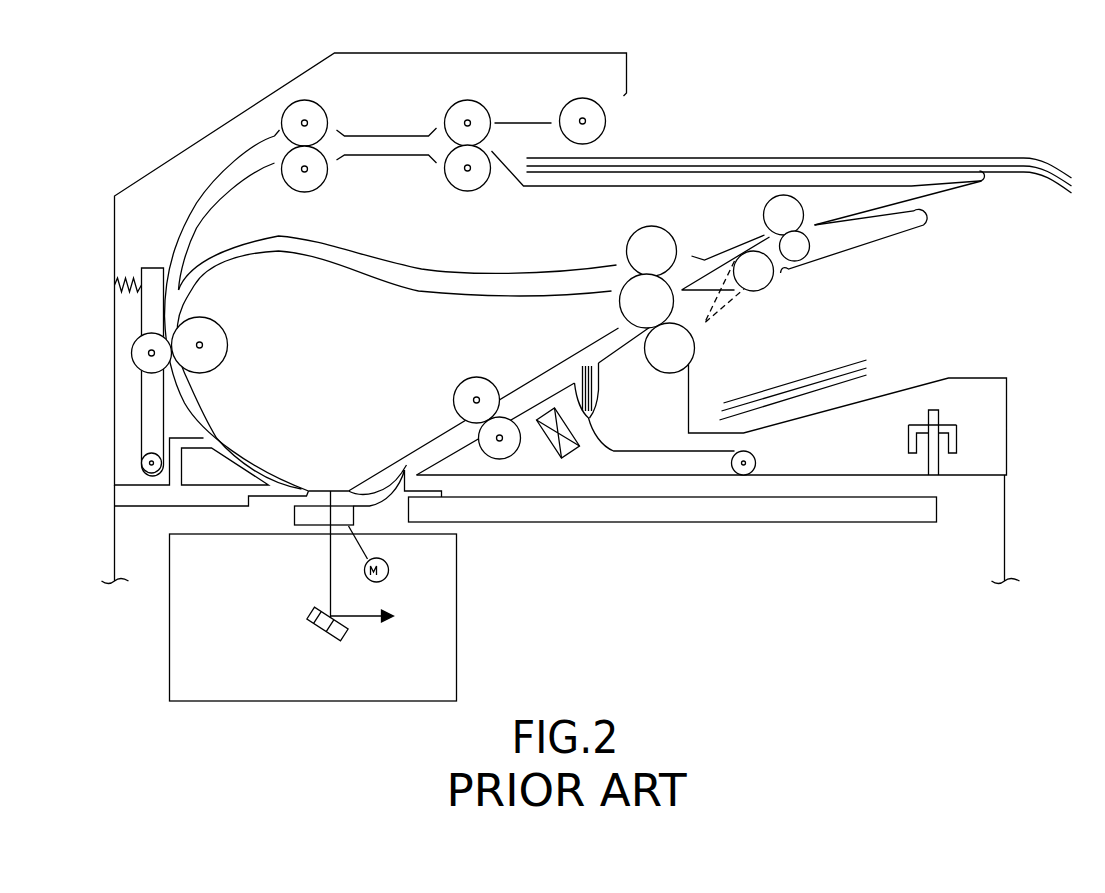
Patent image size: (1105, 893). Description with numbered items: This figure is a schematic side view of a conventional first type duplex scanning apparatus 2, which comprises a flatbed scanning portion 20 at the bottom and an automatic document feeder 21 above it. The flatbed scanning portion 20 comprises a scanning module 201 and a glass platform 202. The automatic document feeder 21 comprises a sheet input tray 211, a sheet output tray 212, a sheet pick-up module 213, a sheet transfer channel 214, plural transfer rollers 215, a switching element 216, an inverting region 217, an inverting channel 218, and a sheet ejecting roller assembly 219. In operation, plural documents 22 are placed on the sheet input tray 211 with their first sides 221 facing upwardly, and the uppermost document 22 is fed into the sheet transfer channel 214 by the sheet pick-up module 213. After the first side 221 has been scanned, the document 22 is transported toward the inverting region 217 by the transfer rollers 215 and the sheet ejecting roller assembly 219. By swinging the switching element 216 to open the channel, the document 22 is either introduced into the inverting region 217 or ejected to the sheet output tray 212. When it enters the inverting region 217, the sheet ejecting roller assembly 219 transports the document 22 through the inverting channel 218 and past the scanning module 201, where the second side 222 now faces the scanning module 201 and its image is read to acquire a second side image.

The conventional first type duplex scanning apparatus 2 is at (956, 56).
The flatbed scanning portion 20 is at (990, 558).
The scanning module 201 is at (445, 615).
The glass platform 202 is at (673, 531).
The automatic document feeder 21 is at (297, 70).
The sheet input tray 211 is at (837, 170).
The sheet output tray 212 is at (873, 402).
The sheet pick-up module 213 is at (573, 108).
The sheet transfer channel 214 is at (210, 178).
The transfer rollers 215 is at (292, 115).
The switching element 216 is at (740, 286).
The inverting region 217 is at (868, 215).
The inverting channel 218 is at (357, 257).
The sheet ejecting roller assembly 219 is at (640, 248).
The documents 22 is at (647, 153).
The first side 221 is at (737, 155).
The second side 222 is at (723, 167).